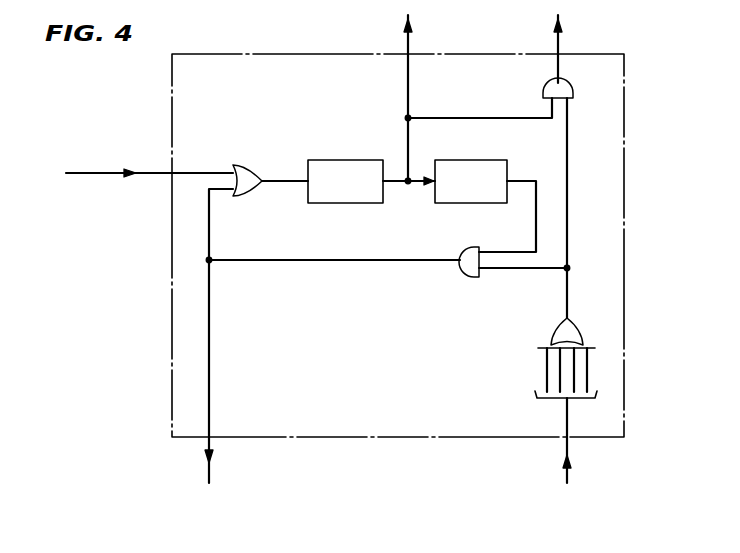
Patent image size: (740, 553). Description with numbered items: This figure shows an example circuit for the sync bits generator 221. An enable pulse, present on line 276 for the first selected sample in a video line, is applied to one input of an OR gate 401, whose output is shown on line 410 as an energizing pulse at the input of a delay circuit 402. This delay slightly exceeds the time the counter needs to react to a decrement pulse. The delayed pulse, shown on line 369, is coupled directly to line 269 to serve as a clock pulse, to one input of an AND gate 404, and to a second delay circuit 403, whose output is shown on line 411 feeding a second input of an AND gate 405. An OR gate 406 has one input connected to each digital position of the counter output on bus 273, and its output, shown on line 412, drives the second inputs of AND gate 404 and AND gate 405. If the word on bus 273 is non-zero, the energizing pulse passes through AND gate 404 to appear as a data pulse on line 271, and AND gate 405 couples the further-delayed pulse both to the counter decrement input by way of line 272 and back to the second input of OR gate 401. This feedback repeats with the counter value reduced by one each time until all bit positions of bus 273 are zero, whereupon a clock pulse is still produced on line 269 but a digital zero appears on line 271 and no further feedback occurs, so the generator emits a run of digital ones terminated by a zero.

The sync bits generator 221 is at (178, 338).
The clock line 269 is at (407, 37).
The data line 271 is at (557, 37).
The enable line 276 is at (114, 175).
The OR gate 401 is at (243, 164).
The delay circuit 402 is at (340, 160).
The delay circuit 403 is at (474, 160).
The AND gate 404 is at (543, 96).
The AND gate 405 is at (462, 275).
The OR gate 406 is at (558, 330).
The OR gate output line 410 is at (280, 185).
The second delay output line 411 is at (528, 178).
The AND gate output line 412 is at (569, 293).
The first delay output line 369 is at (398, 185).
The decrement line 272 is at (337, 262).
The bus 273 is at (566, 448).